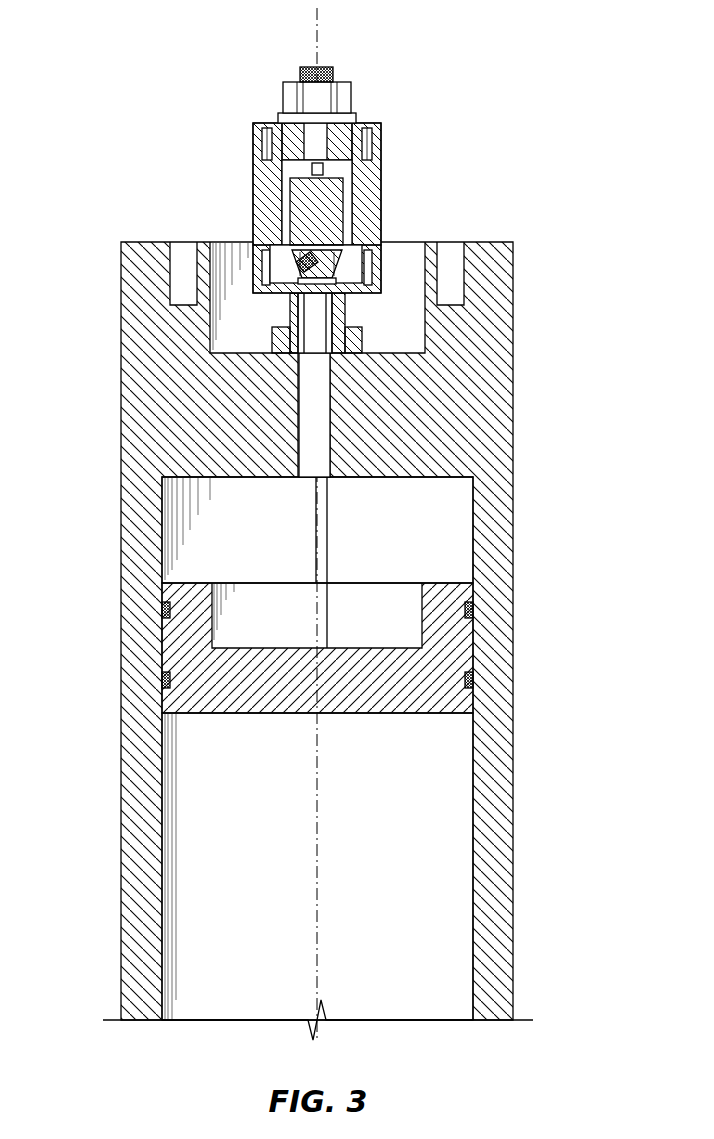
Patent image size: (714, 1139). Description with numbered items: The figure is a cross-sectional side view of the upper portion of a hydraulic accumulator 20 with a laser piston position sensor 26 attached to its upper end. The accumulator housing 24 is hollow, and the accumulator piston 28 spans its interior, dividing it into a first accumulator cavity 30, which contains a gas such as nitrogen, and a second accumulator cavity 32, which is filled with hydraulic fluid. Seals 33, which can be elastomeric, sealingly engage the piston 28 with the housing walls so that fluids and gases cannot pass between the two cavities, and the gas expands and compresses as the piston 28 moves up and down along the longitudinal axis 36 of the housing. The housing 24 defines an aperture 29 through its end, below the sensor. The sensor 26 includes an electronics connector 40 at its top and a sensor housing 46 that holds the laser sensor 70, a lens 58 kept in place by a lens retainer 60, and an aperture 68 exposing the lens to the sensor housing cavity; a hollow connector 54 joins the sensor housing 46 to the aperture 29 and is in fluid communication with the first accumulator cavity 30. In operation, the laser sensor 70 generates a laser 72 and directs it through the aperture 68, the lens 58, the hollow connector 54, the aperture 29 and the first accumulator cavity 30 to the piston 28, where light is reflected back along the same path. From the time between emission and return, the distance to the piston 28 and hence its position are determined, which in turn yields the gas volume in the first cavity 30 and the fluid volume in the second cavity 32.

The accumulator 20 is at (142, 223).
The accumulator housing 24 is at (140, 645).
The laser piston position sensor 26 is at (258, 88).
The accumulator piston 28 is at (205, 690).
The aperture 29 is at (308, 418).
The first accumulator cavity 30 is at (437, 538).
The second accumulator cavity 32 is at (437, 853).
The seals 33 is at (470, 680).
The longitudinal axis 36 is at (318, 32).
The electronics connector 40 is at (338, 98).
The sensor housing 46 is at (370, 205).
The hollow connector 54 is at (300, 330).
The lens 58 is at (340, 262).
The lens retainer 60 is at (330, 268).
The aperture 68 is at (360, 255).
The laser sensor 70 is at (300, 200).
The laser 72 is at (330, 518).